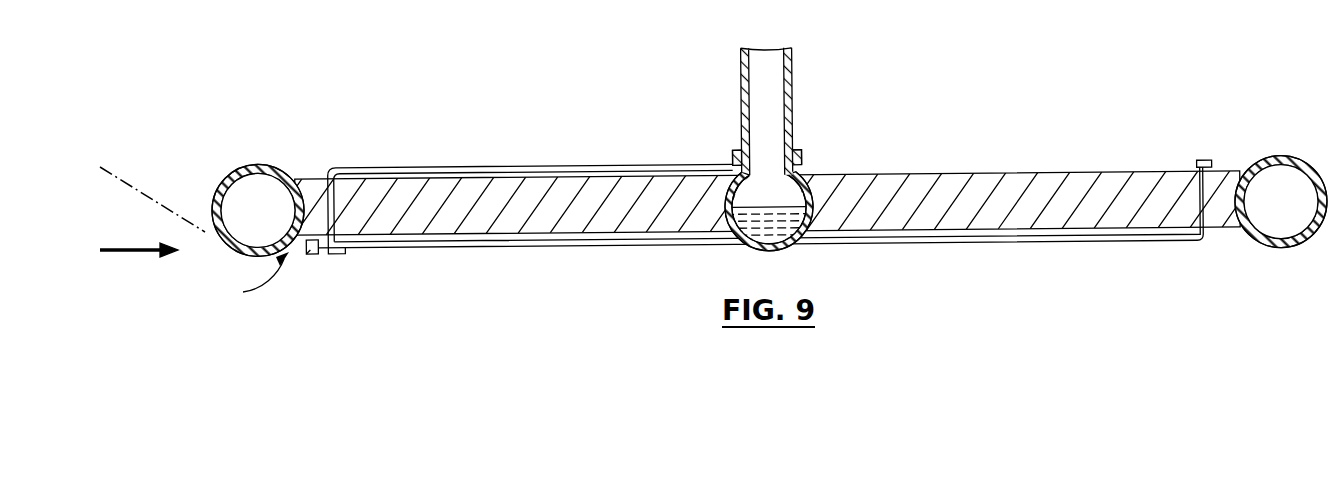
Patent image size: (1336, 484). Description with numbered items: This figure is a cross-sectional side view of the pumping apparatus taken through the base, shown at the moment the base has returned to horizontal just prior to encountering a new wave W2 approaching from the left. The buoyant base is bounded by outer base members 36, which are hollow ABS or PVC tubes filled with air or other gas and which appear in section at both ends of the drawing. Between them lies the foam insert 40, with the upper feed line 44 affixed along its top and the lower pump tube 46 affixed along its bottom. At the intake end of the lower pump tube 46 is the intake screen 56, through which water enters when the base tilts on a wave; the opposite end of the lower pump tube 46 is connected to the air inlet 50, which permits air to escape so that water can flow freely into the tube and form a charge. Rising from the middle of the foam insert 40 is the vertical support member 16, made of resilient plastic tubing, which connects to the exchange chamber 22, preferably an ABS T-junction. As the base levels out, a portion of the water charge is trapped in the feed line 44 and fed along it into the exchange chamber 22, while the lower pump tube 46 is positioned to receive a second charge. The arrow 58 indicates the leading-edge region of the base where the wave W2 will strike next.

The vertical support member 16 is at (795, 84).
The exchange chamber 22 is at (803, 153).
The outer base member 36 is at (255, 164).
The foam insert 40 is at (1011, 178).
The upper feed line 44 is at (557, 170).
The lower pump tube 46 is at (900, 246).
The air inlet 50 is at (1203, 163).
The intake screen 56 is at (311, 252).
The roller surface 58 is at (250, 281).
The new wave W2 is at (151, 212).